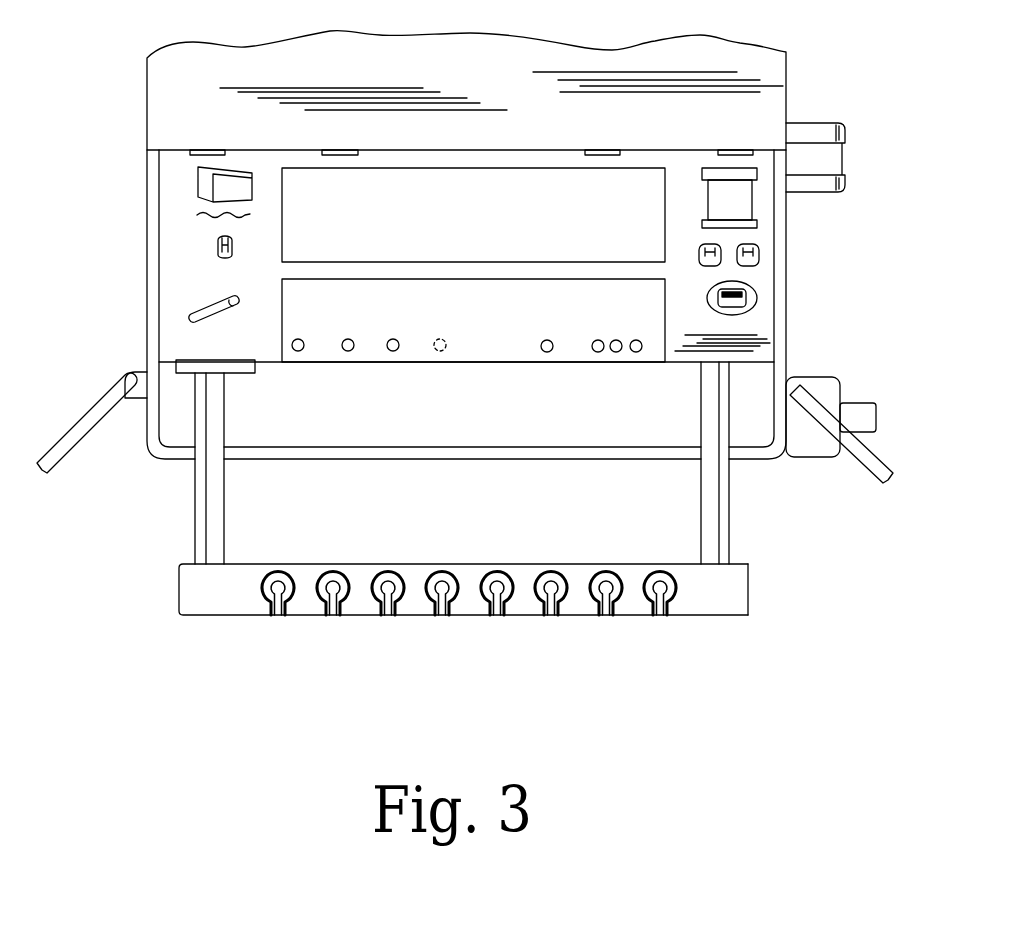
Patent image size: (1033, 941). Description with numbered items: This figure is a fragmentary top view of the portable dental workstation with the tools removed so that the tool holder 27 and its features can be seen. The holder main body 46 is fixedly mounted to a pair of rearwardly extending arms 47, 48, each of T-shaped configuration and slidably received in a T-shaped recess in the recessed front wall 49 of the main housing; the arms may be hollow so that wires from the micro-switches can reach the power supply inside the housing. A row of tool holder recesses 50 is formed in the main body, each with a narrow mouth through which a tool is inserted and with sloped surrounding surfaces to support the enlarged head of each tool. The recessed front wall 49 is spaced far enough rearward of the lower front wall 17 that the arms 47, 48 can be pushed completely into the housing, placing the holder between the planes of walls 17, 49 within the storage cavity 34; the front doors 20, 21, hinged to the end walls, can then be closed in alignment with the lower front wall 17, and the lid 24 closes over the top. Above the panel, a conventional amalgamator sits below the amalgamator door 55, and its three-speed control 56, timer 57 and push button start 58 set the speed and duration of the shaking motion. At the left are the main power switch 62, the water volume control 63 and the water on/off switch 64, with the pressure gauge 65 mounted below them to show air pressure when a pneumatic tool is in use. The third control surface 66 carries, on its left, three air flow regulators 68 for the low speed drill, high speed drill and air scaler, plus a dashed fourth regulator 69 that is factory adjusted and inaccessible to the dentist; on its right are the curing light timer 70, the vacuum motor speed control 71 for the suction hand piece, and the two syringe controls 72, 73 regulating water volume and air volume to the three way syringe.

The lower front wall 17 is at (380, 462).
The front door 20 is at (103, 398).
The front door 21 is at (865, 455).
The lid 24 is at (773, 68).
The tool holder 27 is at (746, 578).
The storage cavity 34 is at (583, 420).
The holder main body 46 is at (726, 610).
The rearwardly extending arm 47 is at (210, 490).
The rearwardly extending arm 48 is at (713, 541).
The recessed front wall 49 is at (275, 360).
The tool holder recess 50 is at (280, 615).
The amalgamator door 55 is at (744, 207).
The three-speed control 56 is at (700, 258).
The timer 57 is at (752, 262).
The push button start 58 is at (752, 300).
The main power switch 62 is at (205, 186).
The water volume control 63 is at (216, 243).
The water on/off switch 64 is at (198, 314).
The pressure gauge 65 is at (180, 365).
The third control surface 66 is at (472, 340).
The air flow regulator 68 is at (390, 352).
The fourth regulator 69 is at (447, 352).
The curing light timer 70 is at (545, 340).
The vacuum motor speed control 71 is at (596, 340).
The syringe water volume control 72 is at (616, 340).
The syringe air volume control 73 is at (636, 353).